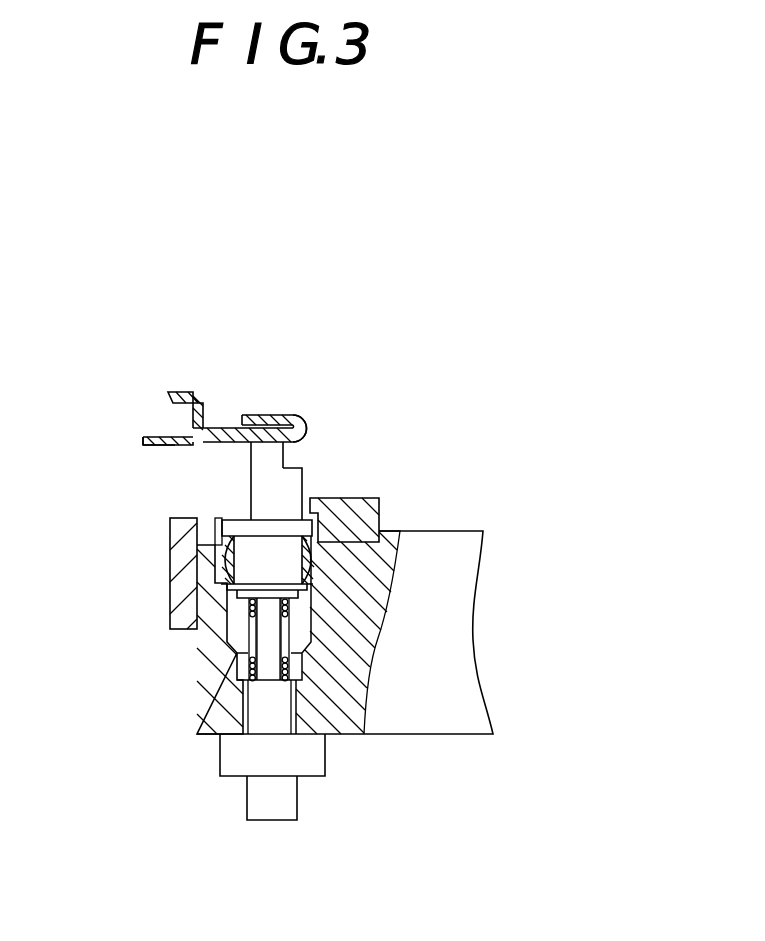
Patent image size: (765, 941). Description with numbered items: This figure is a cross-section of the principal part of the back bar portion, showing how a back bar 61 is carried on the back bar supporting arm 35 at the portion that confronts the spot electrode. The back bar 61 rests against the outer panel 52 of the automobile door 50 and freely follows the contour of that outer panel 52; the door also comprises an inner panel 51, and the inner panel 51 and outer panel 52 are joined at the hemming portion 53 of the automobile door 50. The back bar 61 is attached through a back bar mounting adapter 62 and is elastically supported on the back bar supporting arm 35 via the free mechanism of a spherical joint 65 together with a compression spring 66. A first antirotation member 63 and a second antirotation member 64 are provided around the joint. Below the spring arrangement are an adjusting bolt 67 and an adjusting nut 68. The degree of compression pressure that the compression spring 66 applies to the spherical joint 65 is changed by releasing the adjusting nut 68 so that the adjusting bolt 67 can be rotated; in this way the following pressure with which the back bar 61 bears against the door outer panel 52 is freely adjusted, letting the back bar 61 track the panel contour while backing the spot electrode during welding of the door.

The back bar supporting arm 35 is at (472, 560).
The automobile door 50 is at (218, 414).
The inner panel 51 is at (184, 393).
The outer panel 52 is at (170, 446).
The hemming portion 53 is at (301, 413).
The back bar 61 is at (272, 472).
The back bar mounting adapter 62 is at (292, 497).
The first antirotation member 63 is at (355, 512).
The second antirotation member 64 is at (182, 572).
The spherical joint 65 is at (230, 563).
The compression spring 66 is at (297, 662).
The adjusting bolt 67 is at (288, 795).
The adjusting nut 68 is at (312, 750).